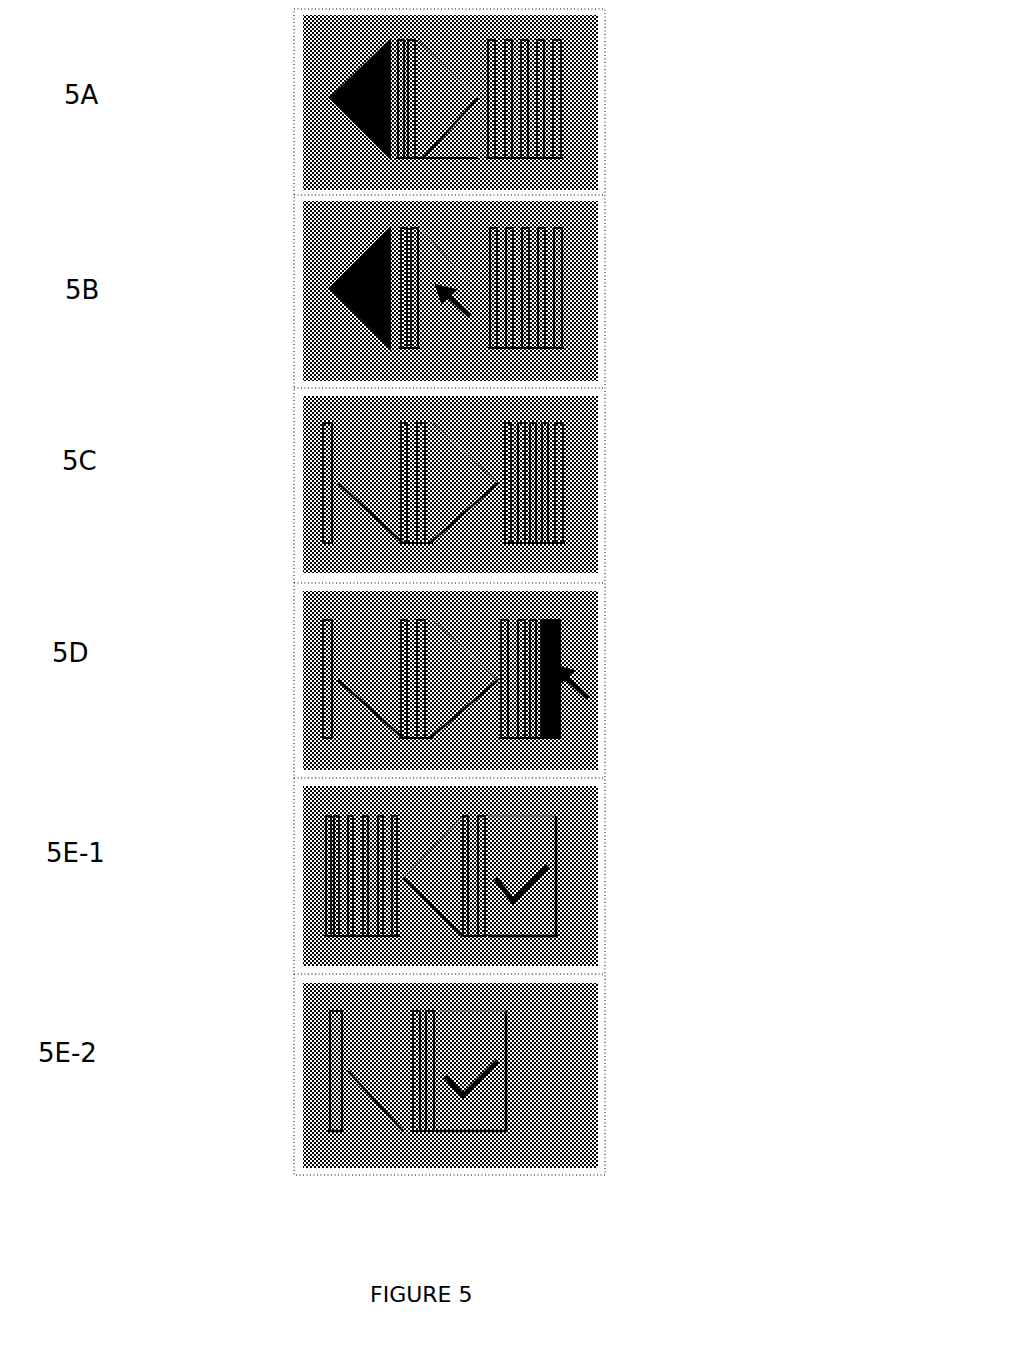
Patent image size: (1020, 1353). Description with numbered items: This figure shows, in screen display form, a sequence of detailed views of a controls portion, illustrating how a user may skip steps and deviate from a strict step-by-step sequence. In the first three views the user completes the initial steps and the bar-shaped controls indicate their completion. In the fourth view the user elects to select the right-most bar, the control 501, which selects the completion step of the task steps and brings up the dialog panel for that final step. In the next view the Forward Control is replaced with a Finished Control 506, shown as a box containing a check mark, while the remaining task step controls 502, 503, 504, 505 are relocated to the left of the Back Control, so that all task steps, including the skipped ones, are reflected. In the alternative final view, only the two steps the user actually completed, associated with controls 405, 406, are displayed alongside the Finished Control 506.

The control 501 is at (550, 413).
The task step control 502 is at (498, 413).
The task step control 503 is at (512, 413).
The task step control 504 is at (538, 413).
The task step control 505 is at (525, 413).
The Finished Control 506 is at (525, 898).
The control 405 is at (317, 926).
The control 406 is at (323, 932).